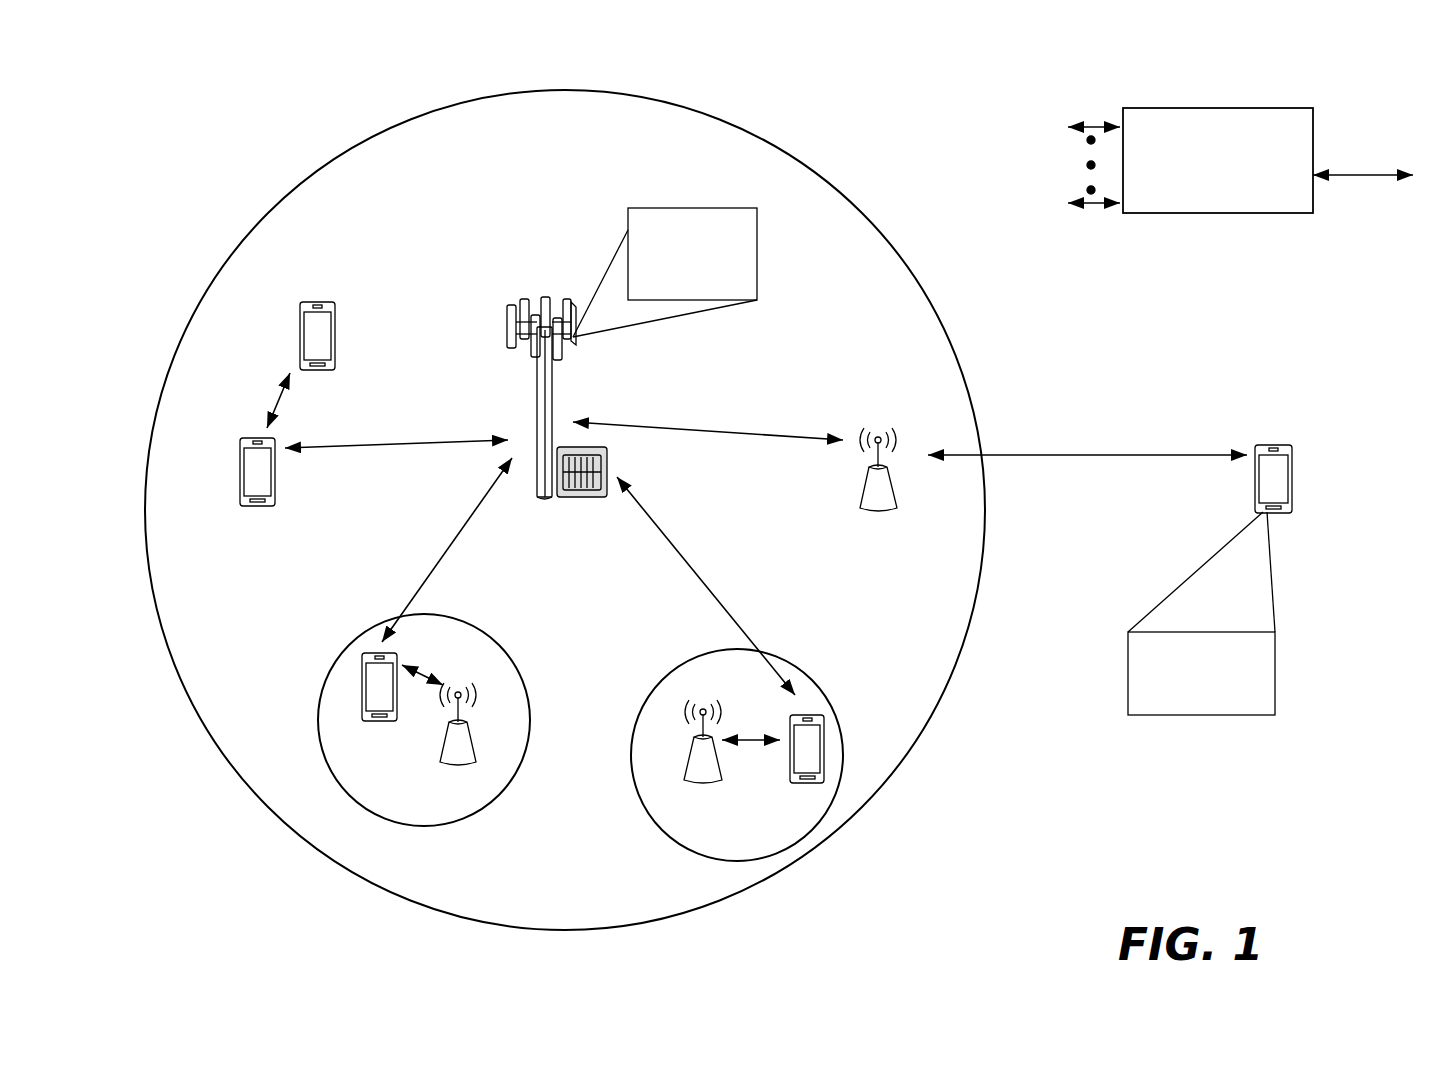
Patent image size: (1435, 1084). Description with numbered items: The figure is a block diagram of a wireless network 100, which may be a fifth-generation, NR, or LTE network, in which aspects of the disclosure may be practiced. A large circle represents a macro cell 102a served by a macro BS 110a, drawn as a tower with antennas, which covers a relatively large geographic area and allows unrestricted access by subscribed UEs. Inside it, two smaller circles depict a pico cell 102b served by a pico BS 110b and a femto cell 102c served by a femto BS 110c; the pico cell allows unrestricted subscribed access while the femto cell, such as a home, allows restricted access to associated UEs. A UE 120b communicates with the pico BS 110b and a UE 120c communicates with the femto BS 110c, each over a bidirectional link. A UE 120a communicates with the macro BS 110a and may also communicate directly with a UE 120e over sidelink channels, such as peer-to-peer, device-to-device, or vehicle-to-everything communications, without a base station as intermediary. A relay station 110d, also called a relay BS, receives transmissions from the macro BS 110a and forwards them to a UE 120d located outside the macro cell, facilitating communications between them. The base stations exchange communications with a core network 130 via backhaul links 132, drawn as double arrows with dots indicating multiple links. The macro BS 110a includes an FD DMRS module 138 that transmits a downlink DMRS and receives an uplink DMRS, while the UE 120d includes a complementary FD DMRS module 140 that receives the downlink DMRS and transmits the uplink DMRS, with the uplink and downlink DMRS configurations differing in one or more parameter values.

The wireless network 100 is at (224, 132).
The macro cell 102a is at (840, 185).
The pico cell 102b is at (513, 660).
The femto cell 102c is at (677, 668).
The macro BS 110a is at (549, 290).
The pico BS 110b is at (478, 753).
The femto BS 110c is at (688, 768).
The relay station 110d is at (880, 428).
The UE 120a is at (240, 470).
The UE 120b is at (366, 722).
The UE 120c is at (801, 785).
The UE 120d is at (1290, 515).
The UE 120e is at (300, 324).
The core network 130 is at (1190, 108).
The backhaul links 132 is at (1091, 120).
The FD DMRS module 138 is at (757, 245).
The FD DMRS module 140 is at (1208, 718).